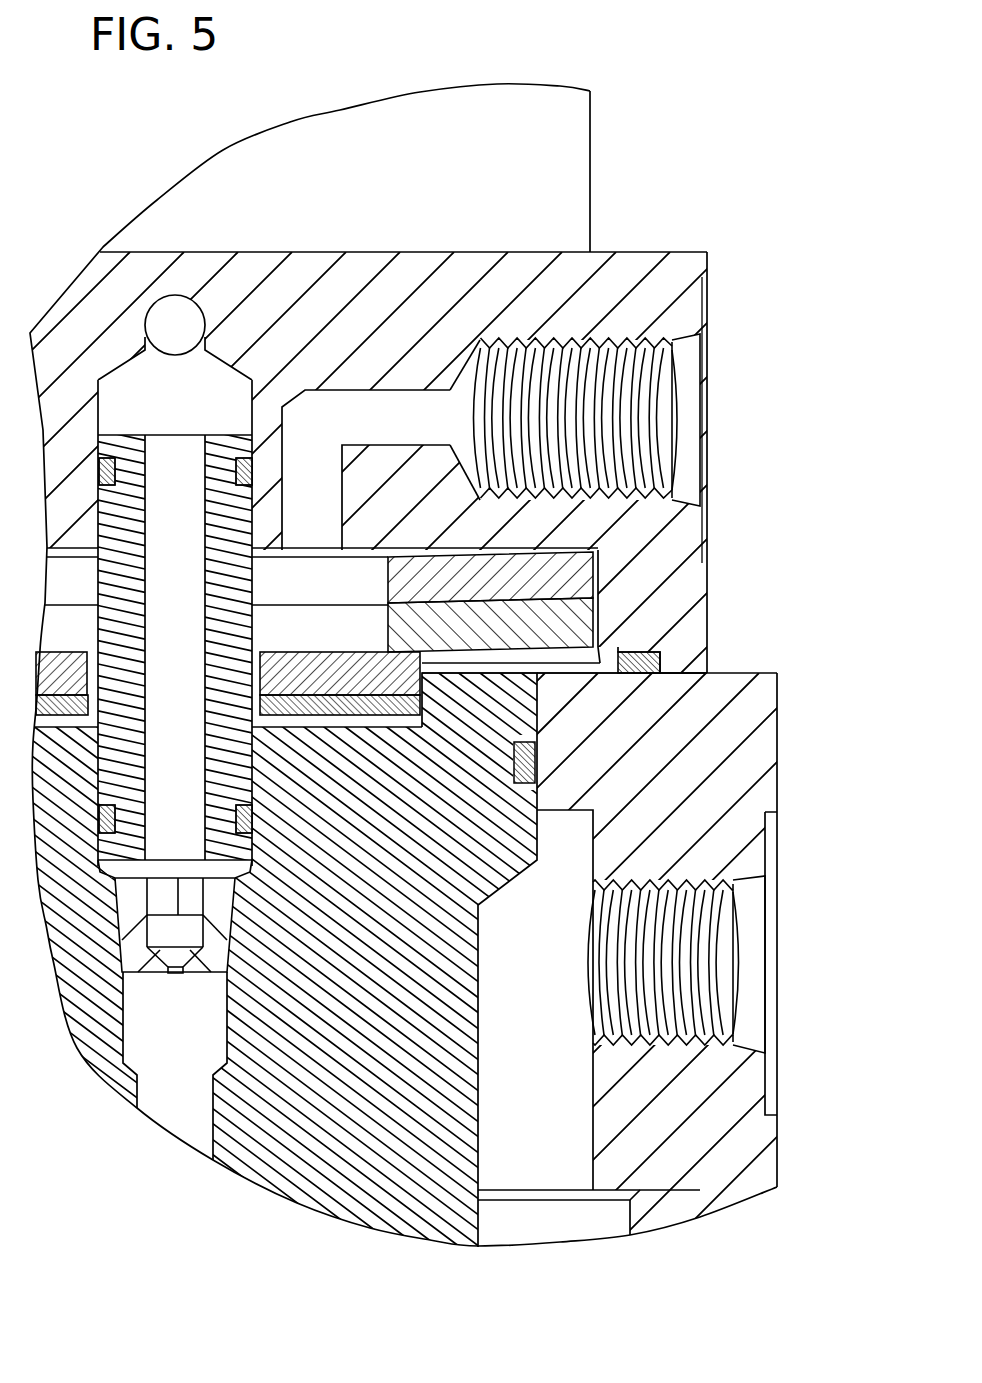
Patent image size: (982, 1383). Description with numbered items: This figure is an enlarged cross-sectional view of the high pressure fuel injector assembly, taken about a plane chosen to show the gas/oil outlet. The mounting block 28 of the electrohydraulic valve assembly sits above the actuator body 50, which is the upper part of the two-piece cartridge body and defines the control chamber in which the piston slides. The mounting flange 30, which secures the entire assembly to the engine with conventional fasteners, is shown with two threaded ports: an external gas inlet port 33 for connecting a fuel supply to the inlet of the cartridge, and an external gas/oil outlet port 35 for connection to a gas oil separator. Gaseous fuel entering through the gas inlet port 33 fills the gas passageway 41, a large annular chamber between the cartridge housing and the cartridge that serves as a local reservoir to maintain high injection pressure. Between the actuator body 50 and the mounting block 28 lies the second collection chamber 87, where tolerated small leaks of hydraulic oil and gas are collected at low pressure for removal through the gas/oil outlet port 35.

The mounting block 28 is at (705, 578).
The mounting flange 30 is at (742, 720).
The external gas inlet port 33 is at (705, 998).
The external gas/oil outlet port 35 is at (657, 409).
The gas passageway 41 is at (523, 1145).
The actuator body 50 is at (357, 1177).
The second collection chamber 87 is at (367, 553).